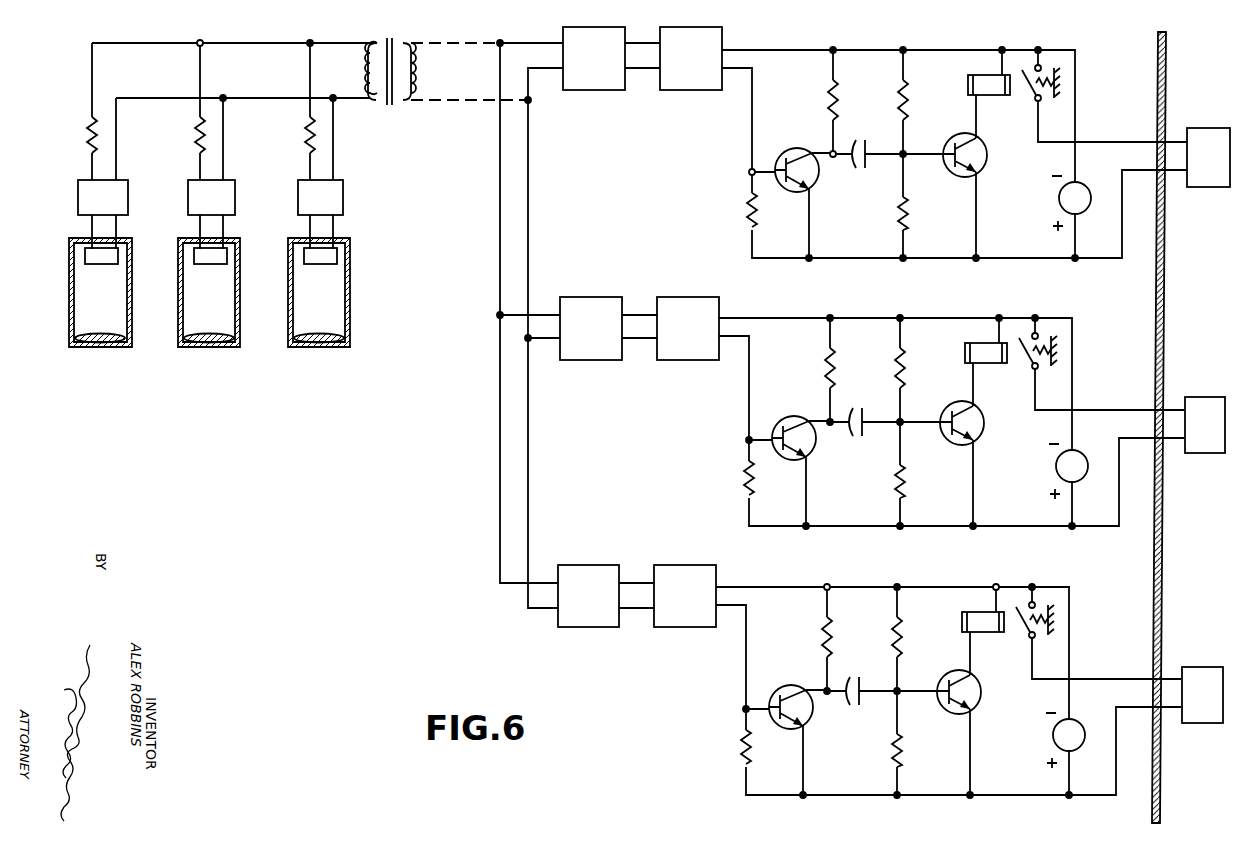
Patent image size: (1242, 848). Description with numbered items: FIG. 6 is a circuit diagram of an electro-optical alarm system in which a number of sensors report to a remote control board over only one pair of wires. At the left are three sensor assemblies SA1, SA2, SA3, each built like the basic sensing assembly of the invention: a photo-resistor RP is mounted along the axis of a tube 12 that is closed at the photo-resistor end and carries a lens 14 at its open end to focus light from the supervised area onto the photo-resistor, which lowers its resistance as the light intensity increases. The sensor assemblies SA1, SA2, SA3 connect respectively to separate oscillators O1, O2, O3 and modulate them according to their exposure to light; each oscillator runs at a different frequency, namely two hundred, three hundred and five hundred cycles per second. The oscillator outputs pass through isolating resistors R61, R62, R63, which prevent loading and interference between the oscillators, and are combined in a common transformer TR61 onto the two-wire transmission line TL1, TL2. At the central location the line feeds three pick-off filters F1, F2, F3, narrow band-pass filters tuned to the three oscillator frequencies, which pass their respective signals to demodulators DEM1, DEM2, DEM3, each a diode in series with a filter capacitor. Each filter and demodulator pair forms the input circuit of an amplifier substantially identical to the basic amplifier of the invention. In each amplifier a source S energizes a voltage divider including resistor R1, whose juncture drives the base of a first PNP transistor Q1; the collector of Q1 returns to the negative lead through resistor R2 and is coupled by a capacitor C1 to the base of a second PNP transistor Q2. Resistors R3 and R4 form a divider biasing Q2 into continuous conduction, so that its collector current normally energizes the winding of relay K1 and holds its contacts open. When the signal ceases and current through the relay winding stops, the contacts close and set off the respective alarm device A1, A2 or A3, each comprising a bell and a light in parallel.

The isolating resistor R61 is at (84, 140).
The isolating resistor R62 is at (192, 140).
The isolating resistor R63 is at (302, 140).
The oscillator O1 is at (128, 195).
The oscillator O2 is at (235, 195).
The oscillator O3 is at (343, 195).
The sensor assembly SA1 is at (70, 293).
The sensor assembly SA2 is at (178, 338).
The sensor assembly SA3 is at (288, 338).
The photo-resistor RP is at (102, 265).
The tube 12 is at (133, 300).
The lens 14 is at (90, 346).
The common transformer TR61 is at (406, 39).
The transmission line TL1 is at (477, 50).
The transmission line TL2 is at (472, 103).
The pick-off filter F1 is at (594, 58).
The pick-off filter F2 is at (591, 328).
The pick-off filter F3 is at (588, 596).
The demodulator DEM1 is at (691, 58).
The demodulator DEM2 is at (688, 328).
The demodulator DEM3 is at (685, 596).
The resistor R1 is at (747, 206).
The resistor R2 is at (840, 104).
The resistor R3 is at (910, 104).
The resistor R4 is at (910, 217).
The PNP transistor Q1 is at (792, 198).
The PNP transistor Q2 is at (987, 163).
The capacitor C1 is at (856, 172).
The relay K1 is at (990, 97).
The source S is at (1072, 466).
The alarm device A1 is at (1197, 189).
The alarm device A2 is at (1203, 455).
The alarm device A3 is at (1195, 725).